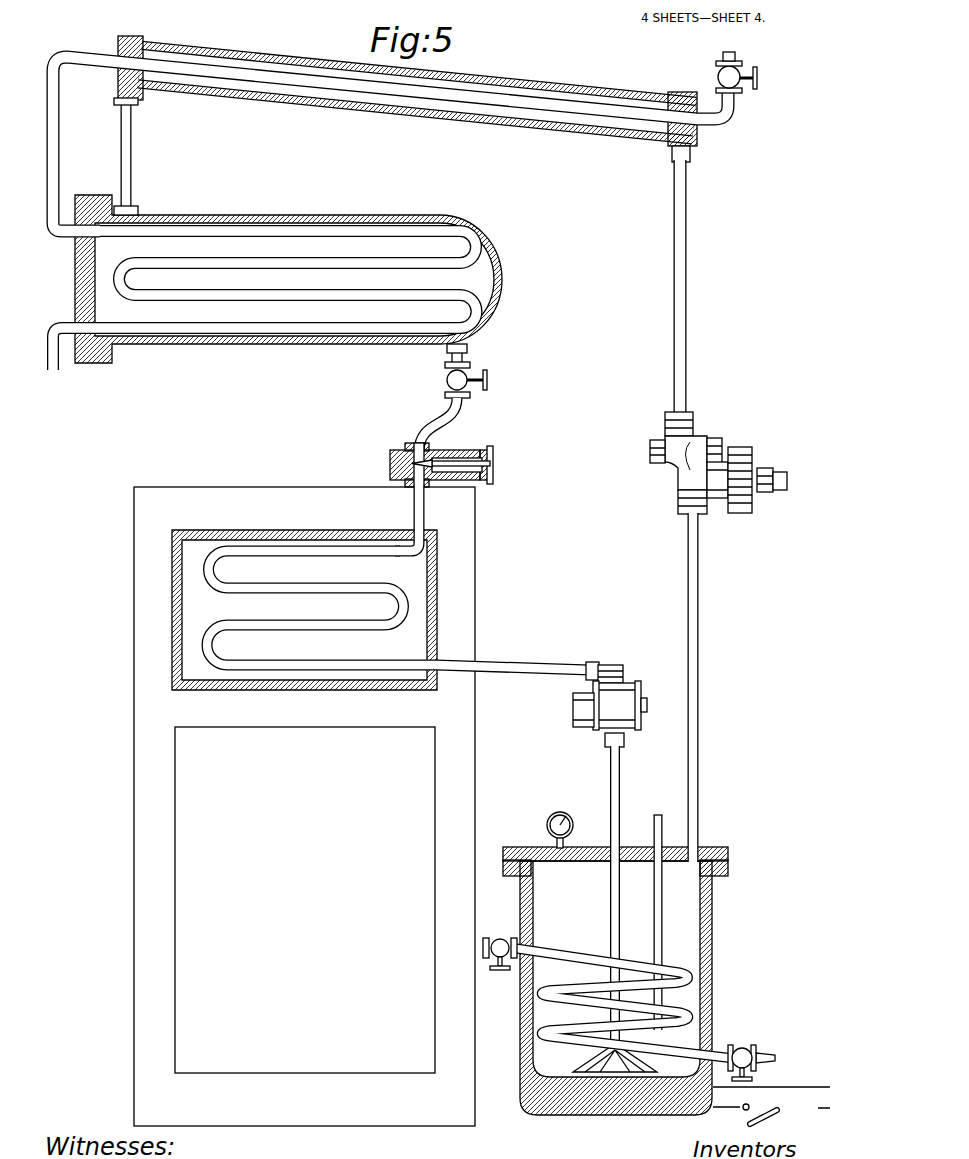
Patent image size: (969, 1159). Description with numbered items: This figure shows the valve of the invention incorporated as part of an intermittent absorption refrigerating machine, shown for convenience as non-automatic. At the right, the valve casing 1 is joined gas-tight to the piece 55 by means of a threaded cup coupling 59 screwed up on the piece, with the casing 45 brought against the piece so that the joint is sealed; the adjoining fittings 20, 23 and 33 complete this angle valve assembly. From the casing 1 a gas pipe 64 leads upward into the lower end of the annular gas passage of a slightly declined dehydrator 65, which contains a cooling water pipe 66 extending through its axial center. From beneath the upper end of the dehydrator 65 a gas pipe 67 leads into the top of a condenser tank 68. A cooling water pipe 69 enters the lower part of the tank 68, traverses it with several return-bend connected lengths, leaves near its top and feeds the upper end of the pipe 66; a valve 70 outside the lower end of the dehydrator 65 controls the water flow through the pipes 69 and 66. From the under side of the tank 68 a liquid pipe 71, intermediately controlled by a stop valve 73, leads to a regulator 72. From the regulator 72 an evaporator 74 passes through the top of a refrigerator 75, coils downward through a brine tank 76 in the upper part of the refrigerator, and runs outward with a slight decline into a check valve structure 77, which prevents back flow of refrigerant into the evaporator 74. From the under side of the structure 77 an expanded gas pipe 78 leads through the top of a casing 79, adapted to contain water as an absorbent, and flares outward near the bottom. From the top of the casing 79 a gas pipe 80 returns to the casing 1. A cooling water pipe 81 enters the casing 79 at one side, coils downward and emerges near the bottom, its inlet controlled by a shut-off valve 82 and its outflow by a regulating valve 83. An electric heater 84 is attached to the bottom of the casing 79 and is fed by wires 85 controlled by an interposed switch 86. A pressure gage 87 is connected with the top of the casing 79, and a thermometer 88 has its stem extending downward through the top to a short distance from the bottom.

The casing 1 is at (699, 448).
The coupling nut 20 is at (650, 452).
The gland nut 23 is at (716, 442).
The valve stem sleeve 33 is at (725, 492).
The casing 45 is at (753, 452).
The piece 55 is at (787, 489).
The cup coupling 59 is at (767, 492).
The gas pipe 64 is at (686, 273).
The dehydrator 65 is at (495, 82).
The cooling water pipe 66 is at (408, 93).
The gas pipe 67 is at (131, 133).
The condenser tank 68 is at (300, 216).
The cooling water pipe 69 is at (59, 323).
The valve 70 is at (718, 73).
The liquid pipe 71 is at (445, 414).
The regulator 72 is at (464, 450).
The stop valve 73 is at (486, 376).
The evaporator 74 is at (412, 507).
The refrigerator 75 is at (133, 829).
The brine tank 76 is at (177, 580).
The check valve structure 77 is at (621, 690).
The expanded gas pipe 78 is at (611, 775).
The casing 79 is at (517, 847).
The gas pipe 80 is at (698, 705).
The cooling water pipe 81 is at (684, 972).
The shut-off valve 82 is at (505, 971).
The regulating valve 83 is at (754, 1078).
The electric heater 84 is at (522, 1097).
The feed wires 85 is at (771, 1099).
The switch 86 is at (773, 1116).
The pressure gage 87 is at (556, 813).
The thermometer 88 is at (658, 814).